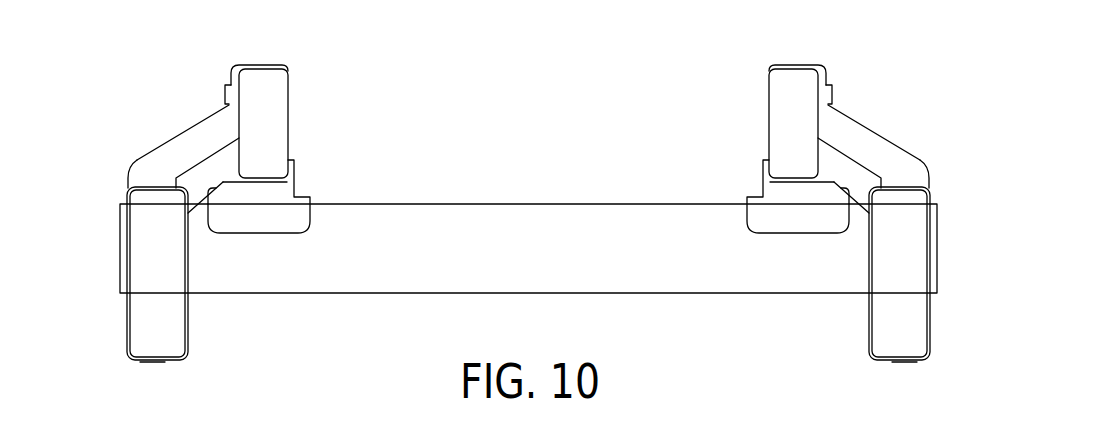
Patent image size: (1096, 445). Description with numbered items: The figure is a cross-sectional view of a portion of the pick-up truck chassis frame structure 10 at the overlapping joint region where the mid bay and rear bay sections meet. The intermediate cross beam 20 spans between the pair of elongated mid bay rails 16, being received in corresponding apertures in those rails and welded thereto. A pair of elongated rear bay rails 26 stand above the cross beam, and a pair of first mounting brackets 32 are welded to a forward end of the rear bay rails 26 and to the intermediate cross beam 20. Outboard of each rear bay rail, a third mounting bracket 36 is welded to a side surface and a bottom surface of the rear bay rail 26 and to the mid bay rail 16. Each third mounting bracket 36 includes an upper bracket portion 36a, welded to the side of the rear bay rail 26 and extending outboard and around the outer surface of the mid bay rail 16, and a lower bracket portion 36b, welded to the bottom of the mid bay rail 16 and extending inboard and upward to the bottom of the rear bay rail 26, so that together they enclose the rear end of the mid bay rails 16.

The pick-up truck chassis frame structure 10 is at (884, 72).
The elongated mid bay rails 16 is at (188, 308).
The intermediate cross beam 20 is at (538, 226).
The elongated rear bay rails 26 is at (254, 66).
The first mounting brackets 32 is at (289, 196).
The third mounting brackets 36 is at (136, 154).
The upper bracket portion 36a is at (128, 178).
The lower bracket portion 36b is at (188, 348).